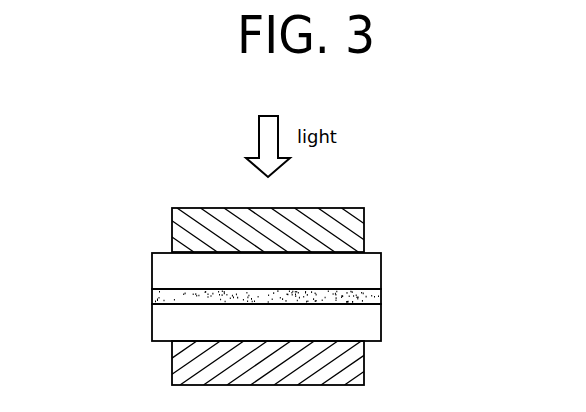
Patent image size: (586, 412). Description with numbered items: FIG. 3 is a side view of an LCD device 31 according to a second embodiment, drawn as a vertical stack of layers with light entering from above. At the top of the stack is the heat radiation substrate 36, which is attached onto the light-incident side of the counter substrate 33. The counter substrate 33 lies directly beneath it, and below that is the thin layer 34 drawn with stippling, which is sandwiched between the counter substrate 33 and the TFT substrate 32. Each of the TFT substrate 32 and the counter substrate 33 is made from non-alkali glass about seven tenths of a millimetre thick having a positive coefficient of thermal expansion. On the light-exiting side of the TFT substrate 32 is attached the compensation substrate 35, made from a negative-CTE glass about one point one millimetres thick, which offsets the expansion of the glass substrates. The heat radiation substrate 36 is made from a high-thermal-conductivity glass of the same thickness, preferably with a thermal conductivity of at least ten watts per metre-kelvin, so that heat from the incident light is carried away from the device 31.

The LCD device 31 is at (137, 267).
The TFT substrate 32 is at (381, 320).
The counter substrate 33 is at (381, 269).
The liquid crystal layer 34 is at (381, 297).
The compensation substrate 35 is at (364, 360).
The heat radiation substrate 36 is at (364, 232).